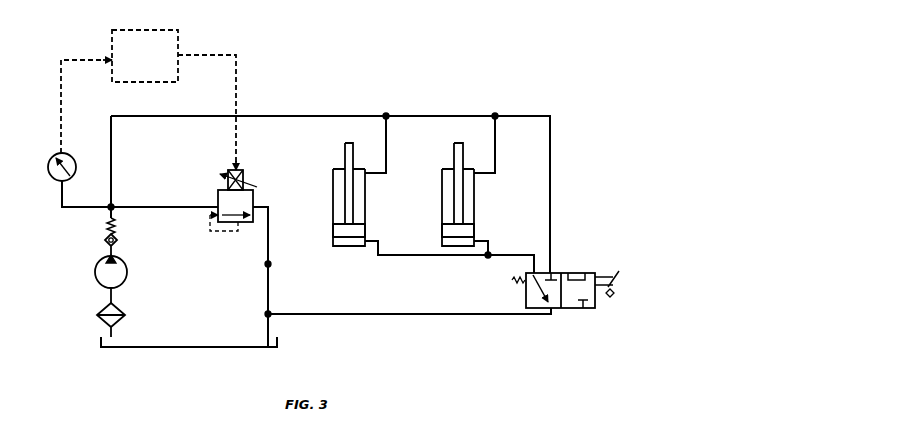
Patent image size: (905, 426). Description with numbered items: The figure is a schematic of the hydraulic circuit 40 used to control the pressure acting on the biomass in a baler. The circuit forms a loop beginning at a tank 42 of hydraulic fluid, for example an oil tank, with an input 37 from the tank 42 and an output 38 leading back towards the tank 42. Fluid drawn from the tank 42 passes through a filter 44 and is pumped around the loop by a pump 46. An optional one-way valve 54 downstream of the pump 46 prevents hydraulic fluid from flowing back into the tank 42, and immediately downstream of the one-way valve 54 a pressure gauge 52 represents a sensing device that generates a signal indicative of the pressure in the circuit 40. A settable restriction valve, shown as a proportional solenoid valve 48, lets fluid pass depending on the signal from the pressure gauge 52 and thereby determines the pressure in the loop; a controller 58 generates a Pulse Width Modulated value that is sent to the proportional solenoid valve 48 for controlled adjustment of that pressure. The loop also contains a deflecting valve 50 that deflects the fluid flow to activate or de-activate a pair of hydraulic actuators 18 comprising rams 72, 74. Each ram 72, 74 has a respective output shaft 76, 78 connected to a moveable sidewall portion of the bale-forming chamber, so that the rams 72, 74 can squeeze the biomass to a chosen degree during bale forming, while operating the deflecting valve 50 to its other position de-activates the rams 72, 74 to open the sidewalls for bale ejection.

The hydraulic circuit 40 is at (543, 78).
The controller 58 is at (143, 29).
The pressure gauge 52 is at (55, 178).
The one-way valve 54 is at (104, 239).
The pump 46 is at (94, 272).
The input 37 is at (110, 298).
The filter 44 is at (102, 326).
The tank 42 is at (190, 348).
The output 38 is at (272, 326).
The proportional solenoid valve 48 is at (217, 196).
The hydraulic actuators 18 is at (318, 201).
The output shaft 76 is at (344, 155).
The output shaft 78 is at (453, 155).
The ram 72 is at (332, 230).
The ram 74 is at (441, 230).
The deflecting valve 50 is at (586, 272).